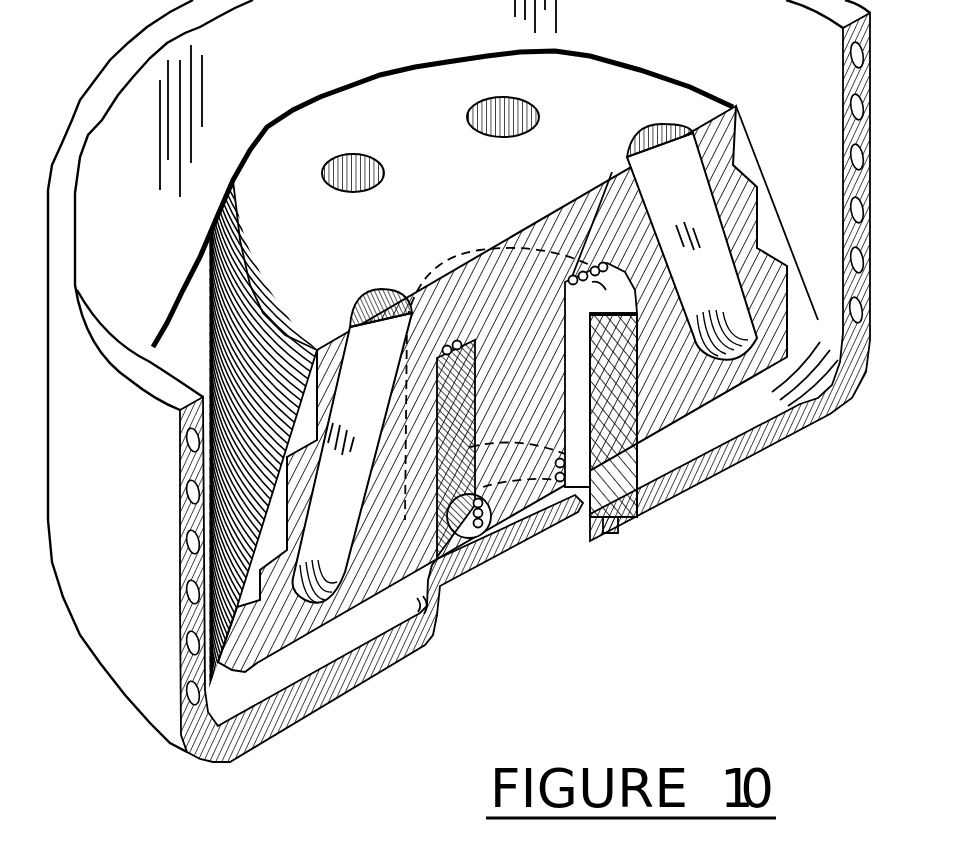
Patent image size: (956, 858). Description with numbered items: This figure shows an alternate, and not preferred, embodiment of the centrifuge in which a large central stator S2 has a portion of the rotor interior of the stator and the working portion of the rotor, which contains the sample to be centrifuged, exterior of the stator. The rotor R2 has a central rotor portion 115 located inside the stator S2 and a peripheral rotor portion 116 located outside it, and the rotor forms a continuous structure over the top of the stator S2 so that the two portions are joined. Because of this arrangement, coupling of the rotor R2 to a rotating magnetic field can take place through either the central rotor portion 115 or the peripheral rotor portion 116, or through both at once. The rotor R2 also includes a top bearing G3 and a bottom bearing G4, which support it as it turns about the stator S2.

The rotor R2 is at (446, 143).
The stator S2 is at (602, 187).
The top bearing G3 is at (470, 258).
The bottom bearing G4 is at (483, 335).
The central rotor portion 115 is at (549, 430).
The peripheral rotor portion 116 is at (419, 533).